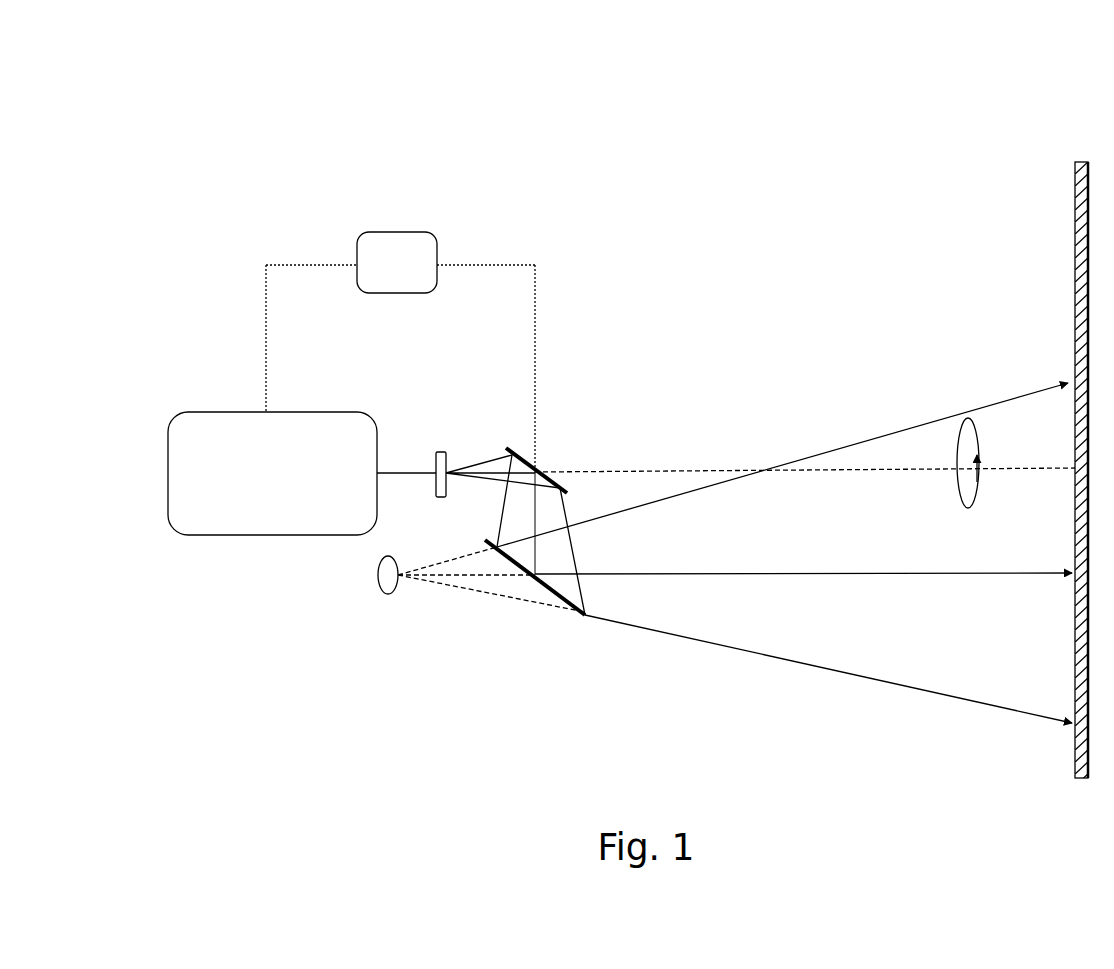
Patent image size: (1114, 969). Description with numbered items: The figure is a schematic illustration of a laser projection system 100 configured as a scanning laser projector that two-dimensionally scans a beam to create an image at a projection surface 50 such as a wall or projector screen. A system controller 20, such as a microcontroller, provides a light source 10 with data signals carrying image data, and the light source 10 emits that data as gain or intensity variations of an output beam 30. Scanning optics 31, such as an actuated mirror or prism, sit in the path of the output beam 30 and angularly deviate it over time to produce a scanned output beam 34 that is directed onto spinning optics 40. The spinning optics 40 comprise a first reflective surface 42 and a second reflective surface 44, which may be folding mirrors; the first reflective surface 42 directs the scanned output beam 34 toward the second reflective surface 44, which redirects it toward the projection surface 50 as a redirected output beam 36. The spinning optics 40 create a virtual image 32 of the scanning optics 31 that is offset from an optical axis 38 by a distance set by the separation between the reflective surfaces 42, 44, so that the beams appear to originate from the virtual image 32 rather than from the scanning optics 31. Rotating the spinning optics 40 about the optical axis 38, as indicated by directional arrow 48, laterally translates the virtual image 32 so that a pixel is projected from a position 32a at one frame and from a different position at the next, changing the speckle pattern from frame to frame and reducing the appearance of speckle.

The laser projection system 100 is at (371, 82).
The light source 10 is at (250, 537).
The system controller 20 is at (400, 232).
The output beam 30 is at (383, 472).
The scanning optics 31 is at (440, 452).
The virtual image 32 is at (388, 596).
The position 32a is at (568, 100).
The scanned output beam 34 is at (487, 487).
The redirected output beam 36 is at (702, 670).
The optical axis 38 is at (703, 472).
The spinning optics 40 is at (510, 621).
The first reflective surface 42 is at (537, 471).
The second reflective surface 44 is at (583, 613).
The directional arrow 48 is at (960, 480).
The projection surface 50 is at (1081, 161).